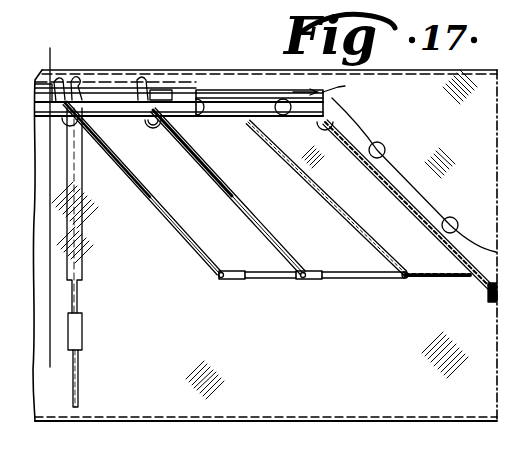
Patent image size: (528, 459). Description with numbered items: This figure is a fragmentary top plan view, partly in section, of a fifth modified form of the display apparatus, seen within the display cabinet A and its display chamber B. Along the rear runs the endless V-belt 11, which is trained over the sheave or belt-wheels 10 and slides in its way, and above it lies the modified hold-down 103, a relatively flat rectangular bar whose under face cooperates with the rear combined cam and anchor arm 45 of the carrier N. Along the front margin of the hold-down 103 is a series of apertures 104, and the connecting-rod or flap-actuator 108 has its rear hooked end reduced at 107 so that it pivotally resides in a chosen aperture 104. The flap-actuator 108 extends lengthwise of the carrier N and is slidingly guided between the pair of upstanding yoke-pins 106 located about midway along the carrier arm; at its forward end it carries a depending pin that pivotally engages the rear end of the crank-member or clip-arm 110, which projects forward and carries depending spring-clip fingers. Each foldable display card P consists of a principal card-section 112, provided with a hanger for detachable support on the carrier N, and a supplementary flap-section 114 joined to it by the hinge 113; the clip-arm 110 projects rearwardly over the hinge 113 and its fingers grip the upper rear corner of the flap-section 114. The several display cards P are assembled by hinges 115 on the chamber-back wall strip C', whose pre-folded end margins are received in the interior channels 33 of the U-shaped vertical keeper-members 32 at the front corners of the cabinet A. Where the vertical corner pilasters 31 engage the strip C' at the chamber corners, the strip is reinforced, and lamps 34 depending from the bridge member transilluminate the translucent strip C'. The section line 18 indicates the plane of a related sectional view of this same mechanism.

The display cabinet A is at (35, 325).
The section line 18 is at (50, 51).
The apertures 104 is at (80, 102).
The combined cam and anchor arm 45 is at (143, 84).
The reduced rear hooked end 107 is at (170, 85).
The endless V-belt 11 is at (259, 99).
The chamber-back wall strip C' is at (280, 124).
The sheave or belt-wheels 10 is at (339, 85).
The hold-down 103 is at (118, 107).
The carrier N is at (202, 188).
The yoke-pins 106 is at (142, 187).
The connecting-rod or flap-actuator 108 is at (200, 251).
The foldable display card P is at (280, 251).
The hinges 115 is at (245, 128).
The vertical corner pilaster 31 is at (318, 126).
The lamps 34 is at (382, 148).
The display chamber B is at (332, 281).
The crank-member or clip-arm 110 is at (226, 279).
The supplementary wing-member or flap-section 114 is at (270, 280).
The principal wing-member or card-section 112 is at (303, 271).
The hinge 113 is at (401, 280).
The interior channel 33 is at (486, 298).
The vertical keeper-member 32 is at (490, 300).